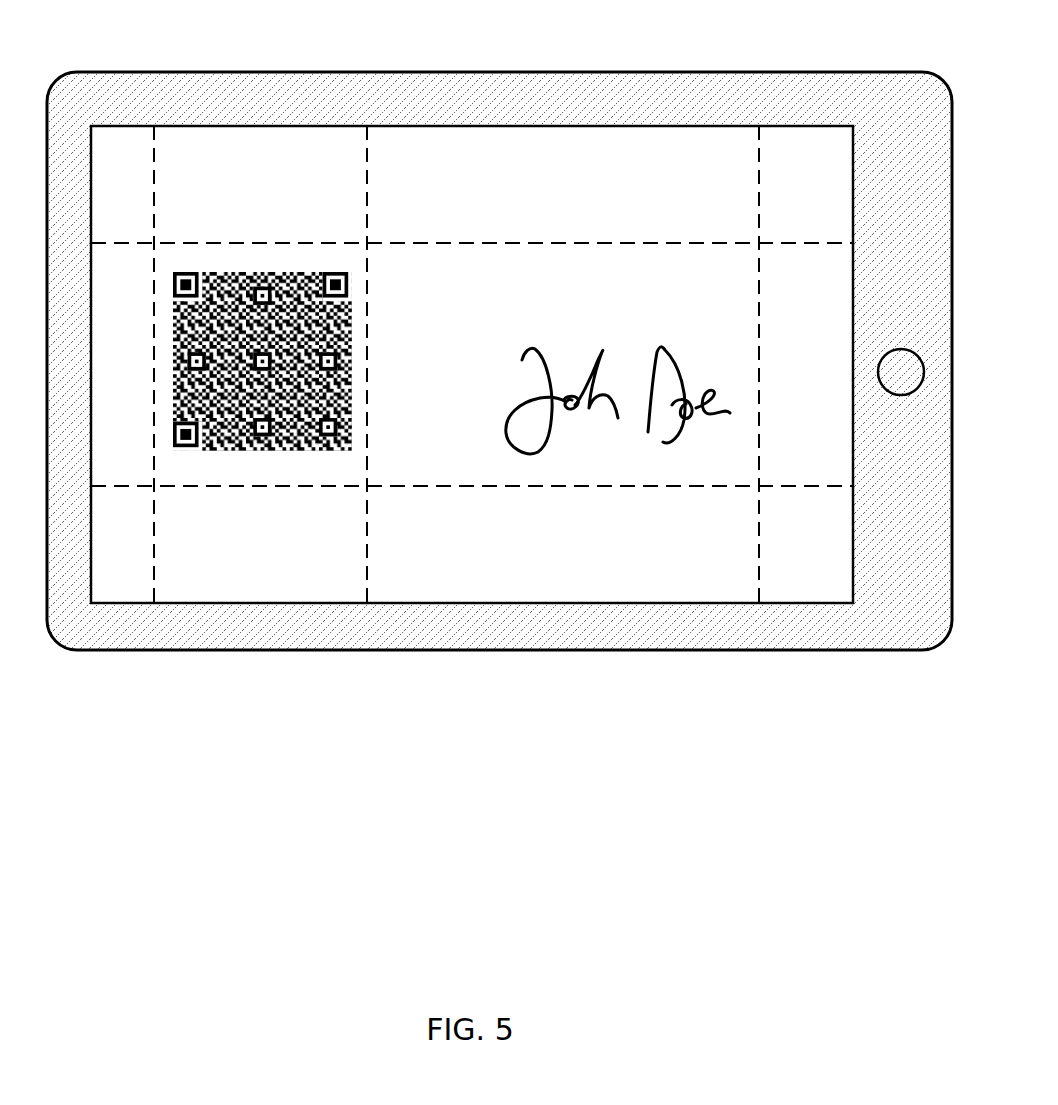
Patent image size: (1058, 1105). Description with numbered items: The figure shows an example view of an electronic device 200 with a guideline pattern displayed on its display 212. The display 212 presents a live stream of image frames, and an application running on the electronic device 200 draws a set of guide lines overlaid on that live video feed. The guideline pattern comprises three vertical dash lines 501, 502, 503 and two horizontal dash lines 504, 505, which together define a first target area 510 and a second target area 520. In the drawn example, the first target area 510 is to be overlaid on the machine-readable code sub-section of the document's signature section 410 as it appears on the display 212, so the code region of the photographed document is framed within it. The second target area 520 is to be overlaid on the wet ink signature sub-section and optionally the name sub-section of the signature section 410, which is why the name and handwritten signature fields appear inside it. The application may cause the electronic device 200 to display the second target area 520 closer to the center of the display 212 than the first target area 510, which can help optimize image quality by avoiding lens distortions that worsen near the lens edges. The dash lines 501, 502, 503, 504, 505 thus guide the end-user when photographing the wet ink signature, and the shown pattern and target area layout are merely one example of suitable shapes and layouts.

The electronic device 200 is at (860, 72).
The display 212 is at (735, 95).
The signature section 410 is at (430, 535).
The vertical dash line 501 is at (155, 195).
The vertical dash line 502 is at (368, 195).
The vertical dash line 503 is at (760, 193).
The horizontal dash line 504 is at (843, 245).
The horizontal dash line 505 is at (843, 488).
The first target area 510 is at (257, 262).
The second target area 520 is at (570, 267).